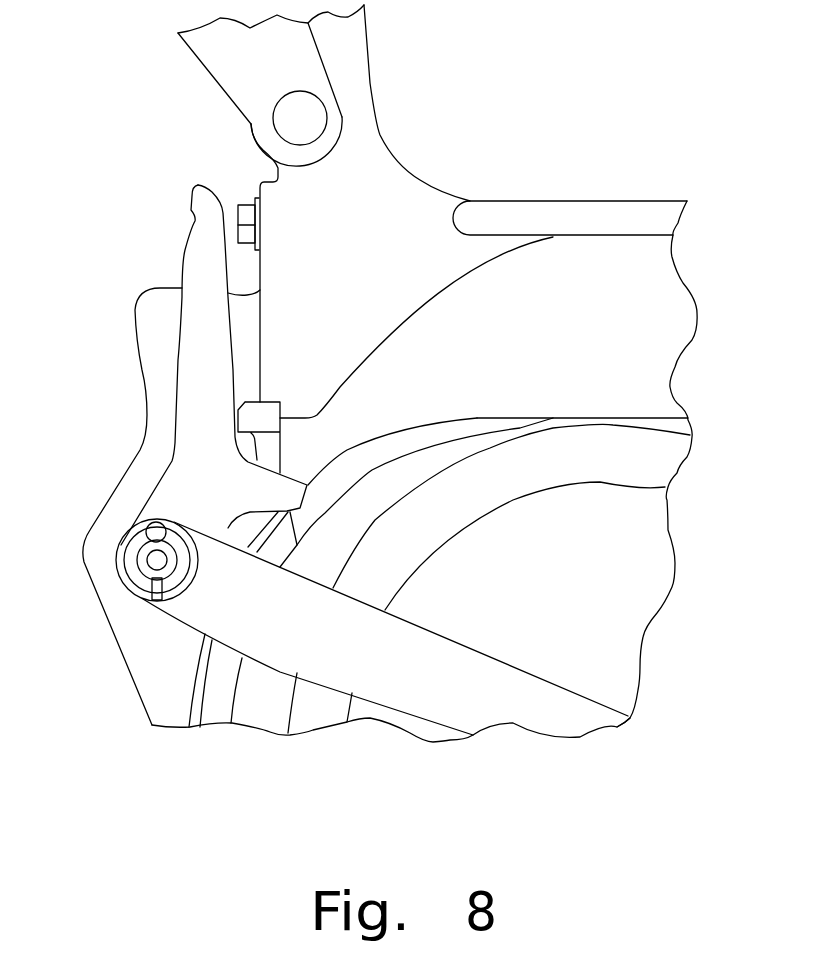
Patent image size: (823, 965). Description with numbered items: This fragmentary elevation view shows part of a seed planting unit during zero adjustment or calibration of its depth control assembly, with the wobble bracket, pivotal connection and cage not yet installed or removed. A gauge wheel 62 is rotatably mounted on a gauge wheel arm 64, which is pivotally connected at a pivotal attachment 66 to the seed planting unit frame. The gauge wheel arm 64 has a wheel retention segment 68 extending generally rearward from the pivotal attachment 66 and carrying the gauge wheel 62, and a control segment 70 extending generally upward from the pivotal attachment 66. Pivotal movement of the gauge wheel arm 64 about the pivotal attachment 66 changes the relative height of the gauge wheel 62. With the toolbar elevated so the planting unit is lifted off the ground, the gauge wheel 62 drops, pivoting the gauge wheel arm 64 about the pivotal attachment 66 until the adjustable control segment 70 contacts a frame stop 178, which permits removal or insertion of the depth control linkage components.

The gauge wheel 62 is at (637, 558).
The gauge wheel arm 64 is at (153, 641).
The pivotal attachment 66 is at (143, 559).
The wheel retention segment 68 is at (438, 703).
The control segment 70 is at (193, 277).
The frame stop 178 is at (268, 408).